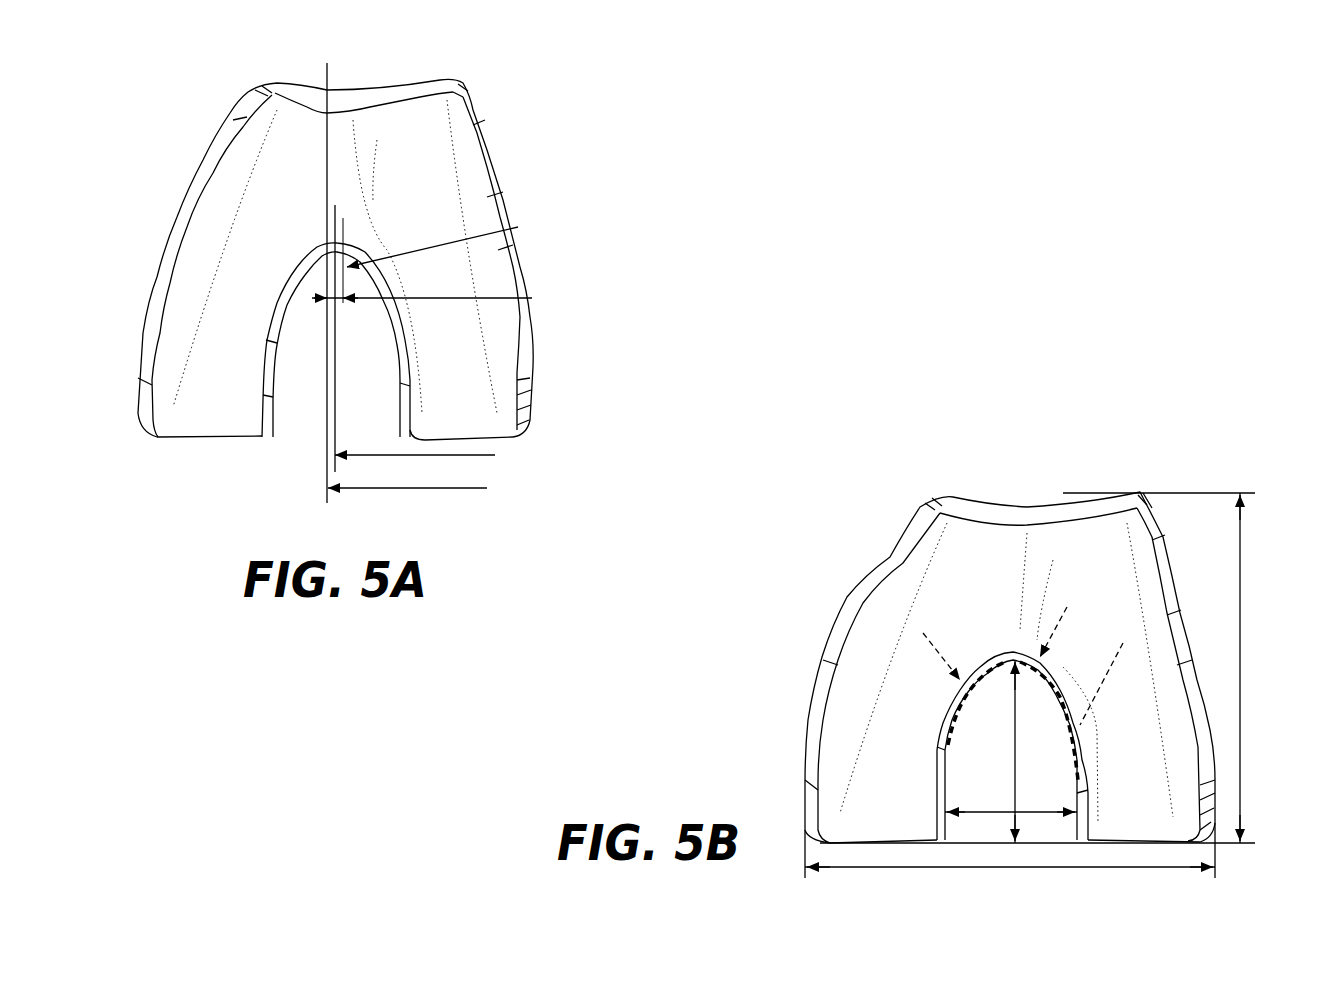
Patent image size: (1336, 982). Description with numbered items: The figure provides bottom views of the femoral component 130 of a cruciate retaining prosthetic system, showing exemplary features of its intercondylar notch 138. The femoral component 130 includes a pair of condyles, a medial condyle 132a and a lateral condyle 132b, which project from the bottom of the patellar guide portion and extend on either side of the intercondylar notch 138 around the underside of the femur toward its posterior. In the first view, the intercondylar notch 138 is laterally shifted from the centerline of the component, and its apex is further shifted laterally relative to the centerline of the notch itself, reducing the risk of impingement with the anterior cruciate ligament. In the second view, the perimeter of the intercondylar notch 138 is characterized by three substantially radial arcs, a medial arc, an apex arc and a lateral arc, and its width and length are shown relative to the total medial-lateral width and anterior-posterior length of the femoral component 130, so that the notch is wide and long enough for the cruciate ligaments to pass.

In FIG. 5A, the femoral component 130 is at (167, 110).
In FIG. 5B, the femoral component 130 is at (917, 493).
In FIG. 5A, the medial condyle 132a is at (163, 410).
In FIG. 5B, the medial condyle 132a is at (853, 697).
In FIG. 5A, the lateral condyle 132b is at (502, 390).
In FIG. 5B, the lateral condyle 132b is at (1160, 800).
In FIG. 5A, the intercondylar notch 138 is at (293, 415).
In FIG. 5B, the intercondylar notch 138 is at (962, 828).